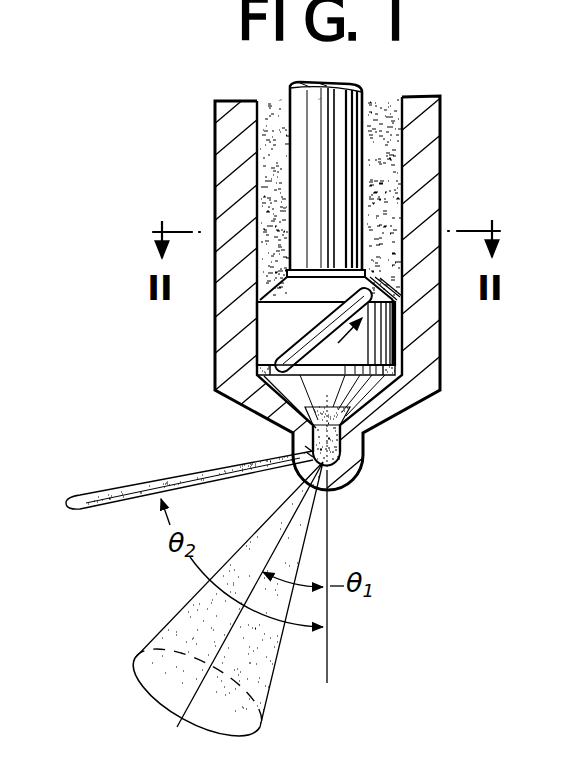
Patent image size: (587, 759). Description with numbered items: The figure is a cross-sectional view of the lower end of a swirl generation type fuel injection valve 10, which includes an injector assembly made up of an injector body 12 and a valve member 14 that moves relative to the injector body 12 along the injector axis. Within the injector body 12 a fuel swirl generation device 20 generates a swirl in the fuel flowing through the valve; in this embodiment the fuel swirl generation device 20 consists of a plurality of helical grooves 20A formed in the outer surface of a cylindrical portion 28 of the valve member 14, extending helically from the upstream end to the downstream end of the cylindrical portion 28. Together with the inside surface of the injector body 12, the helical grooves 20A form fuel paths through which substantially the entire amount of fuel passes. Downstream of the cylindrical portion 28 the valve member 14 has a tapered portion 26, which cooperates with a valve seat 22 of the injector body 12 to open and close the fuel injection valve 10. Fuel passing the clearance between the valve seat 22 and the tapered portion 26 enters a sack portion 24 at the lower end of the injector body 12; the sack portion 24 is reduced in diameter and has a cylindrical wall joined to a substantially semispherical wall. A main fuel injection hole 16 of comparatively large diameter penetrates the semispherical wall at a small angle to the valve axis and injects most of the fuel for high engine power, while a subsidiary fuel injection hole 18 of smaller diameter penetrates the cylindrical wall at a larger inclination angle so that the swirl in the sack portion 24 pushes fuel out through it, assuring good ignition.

The fuel injection valve 10 is at (447, 101).
The injector body 12 is at (436, 193).
The valve member 14 is at (368, 94).
The fuel swirl generation device 20 is at (345, 293).
The helical grooves 20A is at (333, 324).
The valve seat 22 is at (292, 398).
The cylindrical portion 28 is at (382, 346).
The tapered portion 26 is at (365, 400).
The main fuel injection hole 16 is at (306, 470).
The subsidiary fuel injection hole 18 is at (305, 447).
The sack portion 24 is at (352, 453).